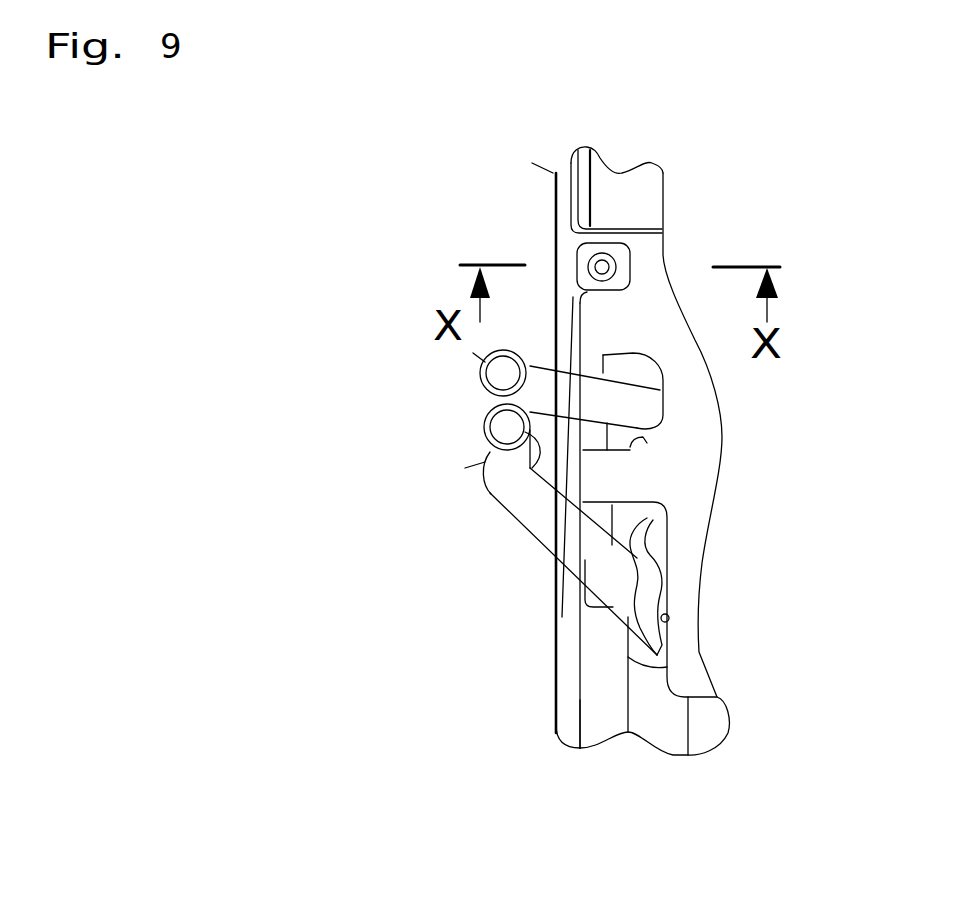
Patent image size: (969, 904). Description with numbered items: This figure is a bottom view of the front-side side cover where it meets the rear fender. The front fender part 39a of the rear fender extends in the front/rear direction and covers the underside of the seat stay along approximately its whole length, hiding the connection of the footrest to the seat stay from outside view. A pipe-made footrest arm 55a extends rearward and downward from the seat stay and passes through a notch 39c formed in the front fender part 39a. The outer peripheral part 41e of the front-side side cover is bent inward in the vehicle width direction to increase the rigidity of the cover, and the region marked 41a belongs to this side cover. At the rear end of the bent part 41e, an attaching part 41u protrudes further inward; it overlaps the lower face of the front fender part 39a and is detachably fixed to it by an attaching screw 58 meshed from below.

The attaching part 41u is at (605, 250).
The attaching screw 58 is at (618, 263).
The front fender part 39a is at (736, 447).
The notch 39c is at (645, 438).
The footrest arm 55a is at (530, 468).
The frame side portion 41a is at (538, 675).
The outer peripheral part 41e is at (562, 706).